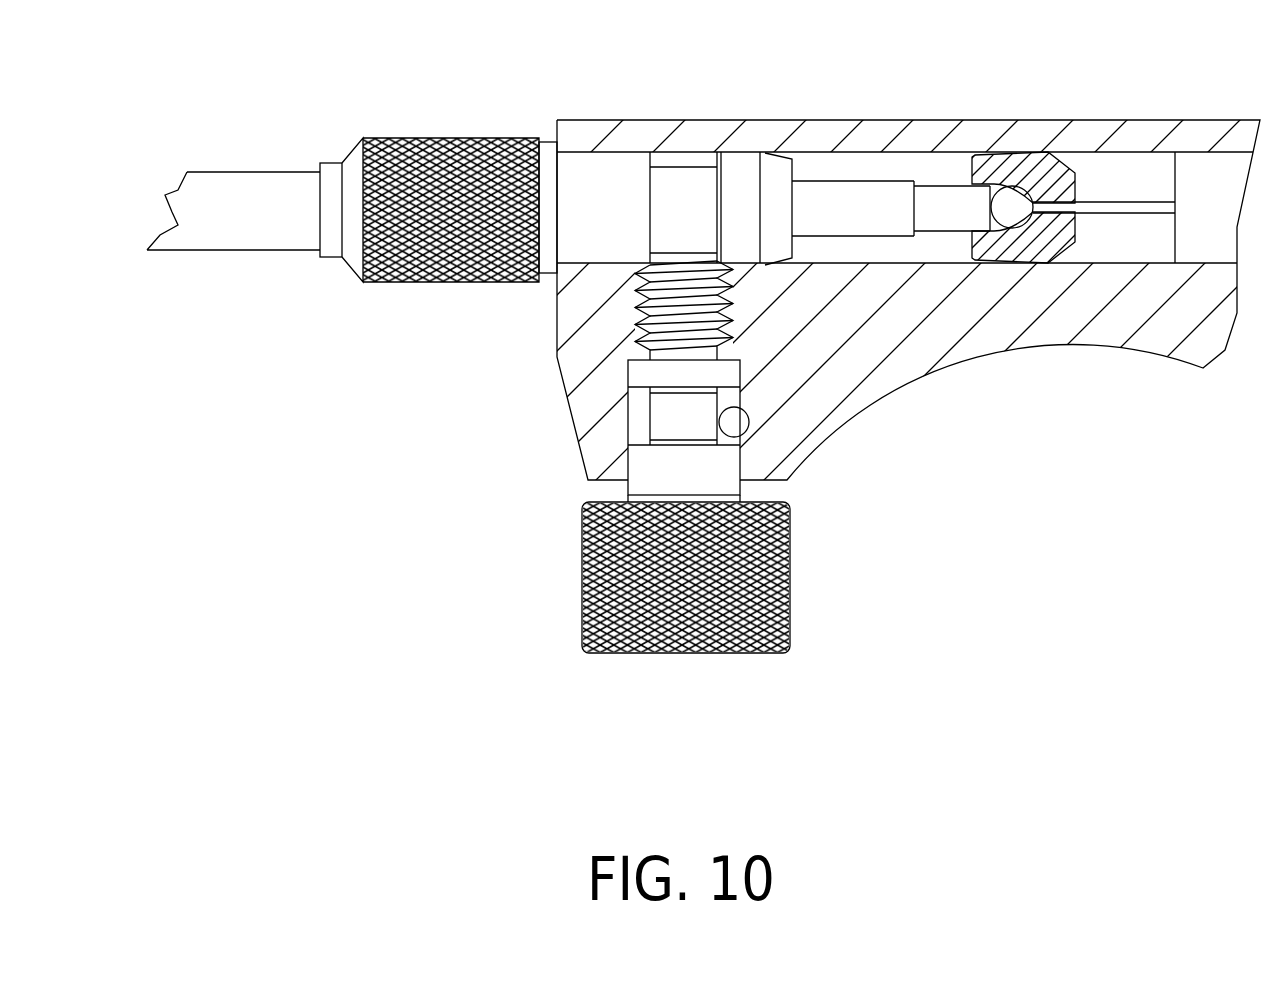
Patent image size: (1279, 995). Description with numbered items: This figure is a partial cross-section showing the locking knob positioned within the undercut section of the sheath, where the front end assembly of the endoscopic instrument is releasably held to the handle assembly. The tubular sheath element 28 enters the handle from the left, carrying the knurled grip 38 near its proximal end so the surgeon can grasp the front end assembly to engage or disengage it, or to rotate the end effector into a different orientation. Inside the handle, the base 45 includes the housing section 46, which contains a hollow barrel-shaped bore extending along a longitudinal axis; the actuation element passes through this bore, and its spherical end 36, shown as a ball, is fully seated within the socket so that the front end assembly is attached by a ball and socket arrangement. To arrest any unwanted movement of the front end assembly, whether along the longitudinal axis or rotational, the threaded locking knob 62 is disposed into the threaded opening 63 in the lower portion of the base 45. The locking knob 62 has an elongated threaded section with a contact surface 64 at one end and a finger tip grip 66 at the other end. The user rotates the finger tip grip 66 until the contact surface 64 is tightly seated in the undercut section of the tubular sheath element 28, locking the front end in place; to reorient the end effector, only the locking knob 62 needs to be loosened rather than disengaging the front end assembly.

The tubular sheath element 28 is at (245, 250).
The knurled grip 38 is at (407, 280).
The contact surface 64 is at (640, 268).
The housing section 46 is at (820, 162).
The base 45 is at (918, 120).
The spherical end 36 is at (1022, 177).
The threaded opening 63 is at (628, 490).
The finger tip grip 66 is at (790, 582).
The threaded locking knob 62 is at (640, 650).